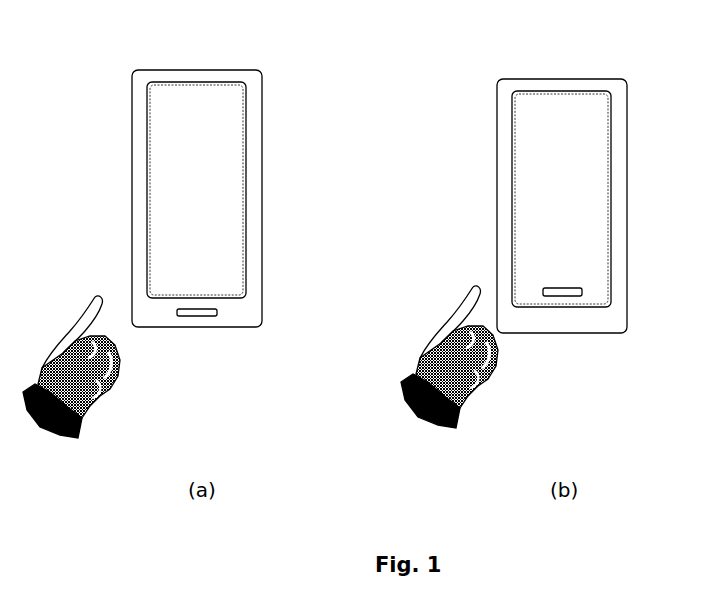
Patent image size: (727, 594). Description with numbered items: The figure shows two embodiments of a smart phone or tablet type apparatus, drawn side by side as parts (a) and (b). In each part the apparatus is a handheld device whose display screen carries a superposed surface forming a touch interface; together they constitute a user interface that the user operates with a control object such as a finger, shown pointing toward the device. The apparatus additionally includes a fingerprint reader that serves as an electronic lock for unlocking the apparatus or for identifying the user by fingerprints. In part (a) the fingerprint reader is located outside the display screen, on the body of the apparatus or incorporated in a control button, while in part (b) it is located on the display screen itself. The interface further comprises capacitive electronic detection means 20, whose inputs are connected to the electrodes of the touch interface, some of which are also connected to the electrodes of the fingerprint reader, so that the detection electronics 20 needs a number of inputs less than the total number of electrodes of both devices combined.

The capacitive electronic detection means 20 is at (559, 423).